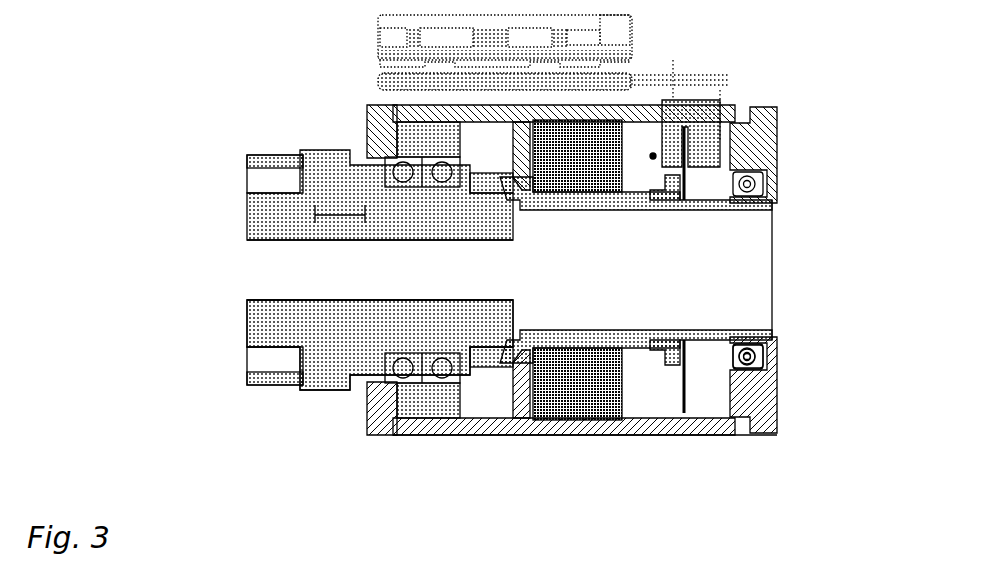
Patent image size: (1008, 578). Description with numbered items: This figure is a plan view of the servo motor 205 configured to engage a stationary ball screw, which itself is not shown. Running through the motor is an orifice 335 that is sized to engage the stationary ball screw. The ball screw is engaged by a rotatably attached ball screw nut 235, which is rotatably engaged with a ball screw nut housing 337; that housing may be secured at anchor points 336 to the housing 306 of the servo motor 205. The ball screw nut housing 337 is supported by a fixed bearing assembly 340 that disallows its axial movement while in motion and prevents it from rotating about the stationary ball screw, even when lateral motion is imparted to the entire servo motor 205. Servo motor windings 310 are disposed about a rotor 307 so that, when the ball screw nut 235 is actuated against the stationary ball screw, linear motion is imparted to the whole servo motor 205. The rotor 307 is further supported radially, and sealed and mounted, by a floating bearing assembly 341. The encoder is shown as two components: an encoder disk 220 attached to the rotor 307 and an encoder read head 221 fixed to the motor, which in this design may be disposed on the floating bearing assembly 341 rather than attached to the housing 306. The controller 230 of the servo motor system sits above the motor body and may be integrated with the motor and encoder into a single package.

The servo motor 205 is at (576, 458).
The encoder disk 220 is at (714, 178).
The encoder read head 221 is at (709, 142).
The controller 230 is at (645, 33).
The ball screw nut 235 is at (251, 205).
The housing 306 is at (729, 437).
The rotor 307 is at (686, 263).
The servo motor windings 310 is at (607, 420).
The orifice 335 is at (290, 265).
The anchor points 336 is at (487, 203).
The ball screw nut housing 337 is at (304, 352).
The fixed bearing assembly 340 is at (383, 393).
The floating bearing assembly 341 is at (776, 357).